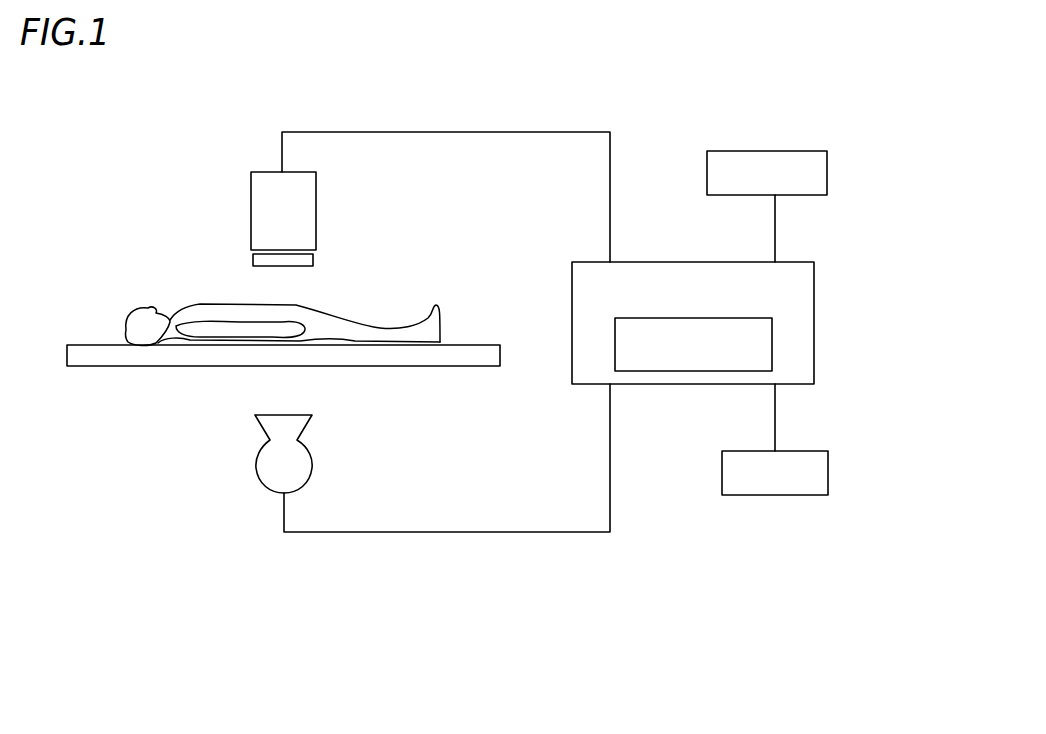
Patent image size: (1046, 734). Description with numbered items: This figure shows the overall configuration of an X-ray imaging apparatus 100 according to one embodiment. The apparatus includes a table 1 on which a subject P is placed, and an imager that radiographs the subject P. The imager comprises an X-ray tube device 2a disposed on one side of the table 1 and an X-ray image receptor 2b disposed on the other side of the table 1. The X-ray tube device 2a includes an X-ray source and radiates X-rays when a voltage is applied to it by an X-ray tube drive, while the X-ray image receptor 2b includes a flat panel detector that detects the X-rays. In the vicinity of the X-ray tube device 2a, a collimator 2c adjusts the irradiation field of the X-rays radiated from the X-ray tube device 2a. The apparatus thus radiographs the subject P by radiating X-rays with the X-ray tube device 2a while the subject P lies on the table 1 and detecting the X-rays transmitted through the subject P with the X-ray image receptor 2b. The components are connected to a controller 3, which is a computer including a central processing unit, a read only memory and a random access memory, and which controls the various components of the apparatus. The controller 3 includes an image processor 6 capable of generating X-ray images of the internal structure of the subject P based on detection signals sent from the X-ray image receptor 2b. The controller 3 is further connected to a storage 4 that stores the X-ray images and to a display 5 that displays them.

The X-ray imaging apparatus 100 is at (147, 125).
The table 1 is at (85, 368).
The X-ray tube device 2a is at (306, 464).
The X-ray image receptor 2b is at (318, 212).
The collimator 2c is at (314, 260).
The controller 3 is at (815, 280).
The storage 4 is at (829, 172).
The display 5 is at (830, 478).
The image processor 6 is at (773, 340).
The subject P is at (193, 300).